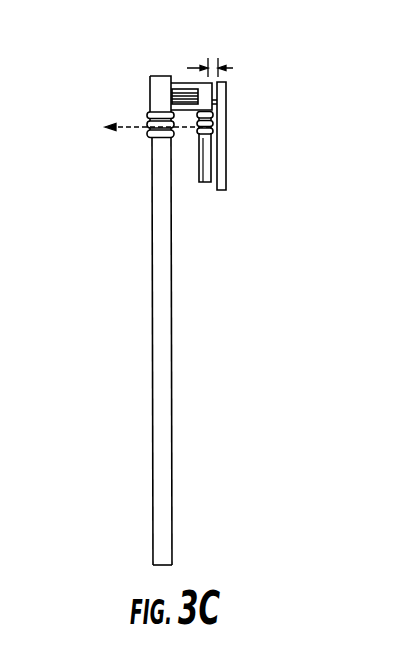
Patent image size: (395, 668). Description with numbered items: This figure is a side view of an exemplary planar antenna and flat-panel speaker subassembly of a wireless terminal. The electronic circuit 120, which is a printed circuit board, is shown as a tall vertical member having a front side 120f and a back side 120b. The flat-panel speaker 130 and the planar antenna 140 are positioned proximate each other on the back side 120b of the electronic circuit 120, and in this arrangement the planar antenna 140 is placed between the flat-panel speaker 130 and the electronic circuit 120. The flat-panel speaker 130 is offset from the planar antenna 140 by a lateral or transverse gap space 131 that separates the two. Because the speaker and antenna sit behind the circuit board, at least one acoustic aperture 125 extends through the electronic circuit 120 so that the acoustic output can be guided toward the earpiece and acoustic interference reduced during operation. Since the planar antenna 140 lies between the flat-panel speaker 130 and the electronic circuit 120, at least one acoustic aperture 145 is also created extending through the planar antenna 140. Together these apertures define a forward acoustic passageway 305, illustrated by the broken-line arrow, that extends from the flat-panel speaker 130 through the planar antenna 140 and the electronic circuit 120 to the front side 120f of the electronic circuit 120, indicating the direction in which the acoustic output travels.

The electronic circuit 120 is at (170, 290).
The front side of the electronic circuit 120f is at (153, 415).
The back side of the electronic circuit 120b is at (174, 430).
The acoustic aperture 125 is at (150, 138).
The flat-panel speaker 130 is at (223, 178).
The gap space 131 is at (233, 68).
The planar antenna 140 is at (207, 174).
The acoustic aperture 145 is at (215, 122).
The forward acoustic passageway 305 is at (132, 127).